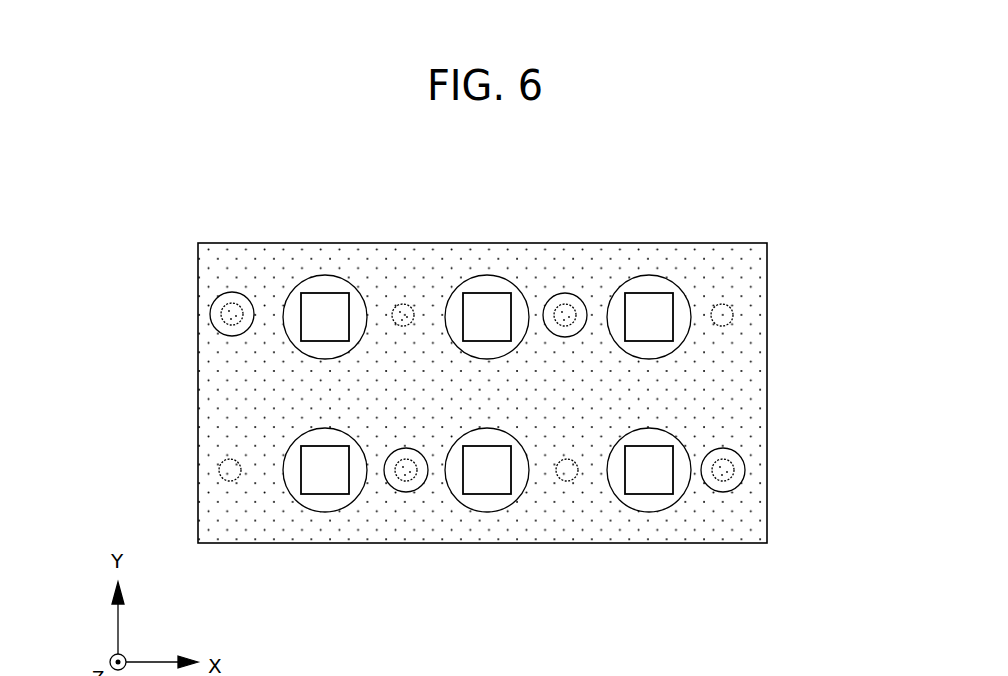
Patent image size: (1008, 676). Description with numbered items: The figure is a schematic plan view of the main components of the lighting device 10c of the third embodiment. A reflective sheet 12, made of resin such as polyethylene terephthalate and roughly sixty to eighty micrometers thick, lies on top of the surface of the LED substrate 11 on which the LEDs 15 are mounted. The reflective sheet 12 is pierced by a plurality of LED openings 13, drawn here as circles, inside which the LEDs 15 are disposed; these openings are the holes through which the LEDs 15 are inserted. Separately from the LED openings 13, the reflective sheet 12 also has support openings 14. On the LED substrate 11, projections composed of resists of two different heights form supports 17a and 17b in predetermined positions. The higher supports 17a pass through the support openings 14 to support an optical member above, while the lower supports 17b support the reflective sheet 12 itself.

The lighting device 10c is at (530, 351).
The LED substrate 11 is at (768, 408).
The reflective sheet 12 is at (275, 268).
The LED openings 13 is at (327, 275).
The support openings 14 is at (570, 297).
The LEDs 15 is at (485, 303).
The supports 17a is at (723, 462).
The supports 17b is at (403, 304).